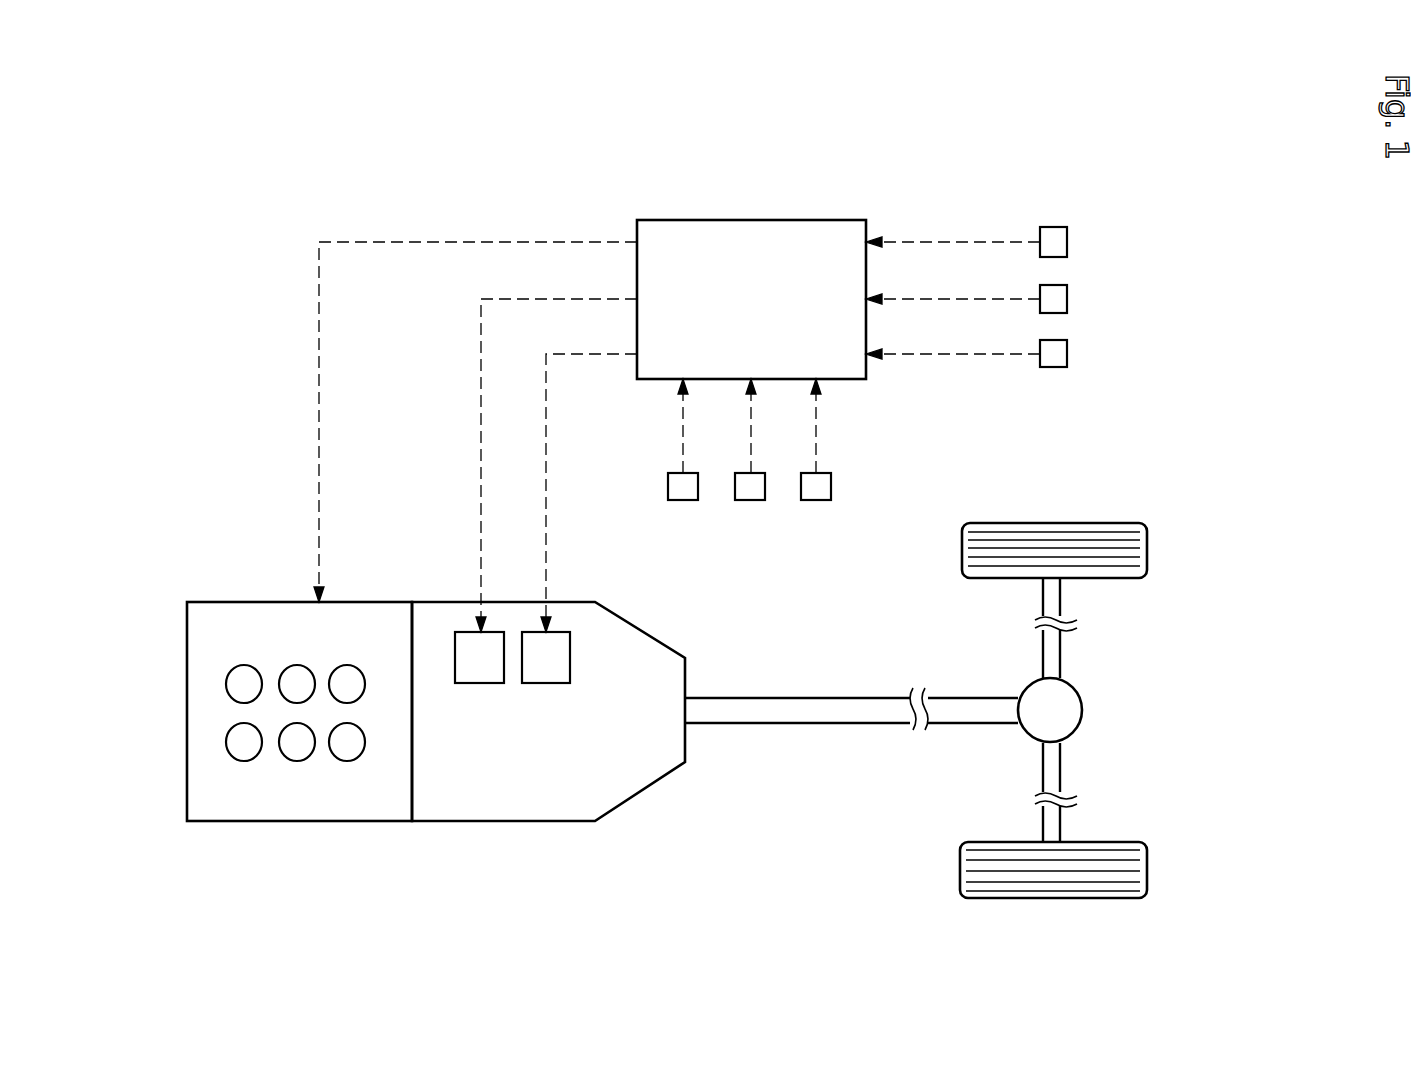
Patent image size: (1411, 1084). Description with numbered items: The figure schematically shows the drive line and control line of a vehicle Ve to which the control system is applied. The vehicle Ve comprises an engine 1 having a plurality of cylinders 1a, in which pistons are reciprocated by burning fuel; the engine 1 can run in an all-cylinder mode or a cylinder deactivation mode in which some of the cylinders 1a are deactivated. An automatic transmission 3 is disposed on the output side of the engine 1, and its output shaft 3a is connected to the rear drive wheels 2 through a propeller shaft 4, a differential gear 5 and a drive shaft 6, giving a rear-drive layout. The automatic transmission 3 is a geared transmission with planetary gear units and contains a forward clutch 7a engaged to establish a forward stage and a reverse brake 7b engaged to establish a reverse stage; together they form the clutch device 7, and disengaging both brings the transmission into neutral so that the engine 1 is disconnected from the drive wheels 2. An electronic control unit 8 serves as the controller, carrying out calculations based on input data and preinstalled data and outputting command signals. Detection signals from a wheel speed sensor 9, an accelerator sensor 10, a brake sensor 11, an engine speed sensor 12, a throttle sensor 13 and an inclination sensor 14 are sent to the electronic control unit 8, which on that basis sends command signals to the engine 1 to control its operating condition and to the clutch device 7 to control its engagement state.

The vehicle Ve is at (252, 352).
The engine 1 is at (268, 743).
The cylinder 1a is at (235, 683).
The drive wheel 2 is at (1135, 545).
The automatic transmission 3 is at (574, 743).
The output shaft 3a is at (693, 707).
The propeller shaft 4 is at (838, 713).
The differential gear 5 is at (1082, 710).
The drive shaft 6 is at (1062, 645).
The clutch device 7 is at (518, 708).
The forward clutch 7a is at (478, 676).
The reverse brake 7b is at (546, 686).
The electronic control unit 8 is at (765, 220).
The wheel speed sensor 9 is at (1067, 242).
The accelerator sensor 10 is at (1067, 299).
The brake sensor 11 is at (1067, 354).
The engine speed sensor 12 is at (683, 487).
The throttle sensor 13 is at (751, 487).
The inclination sensor 14 is at (816, 487).